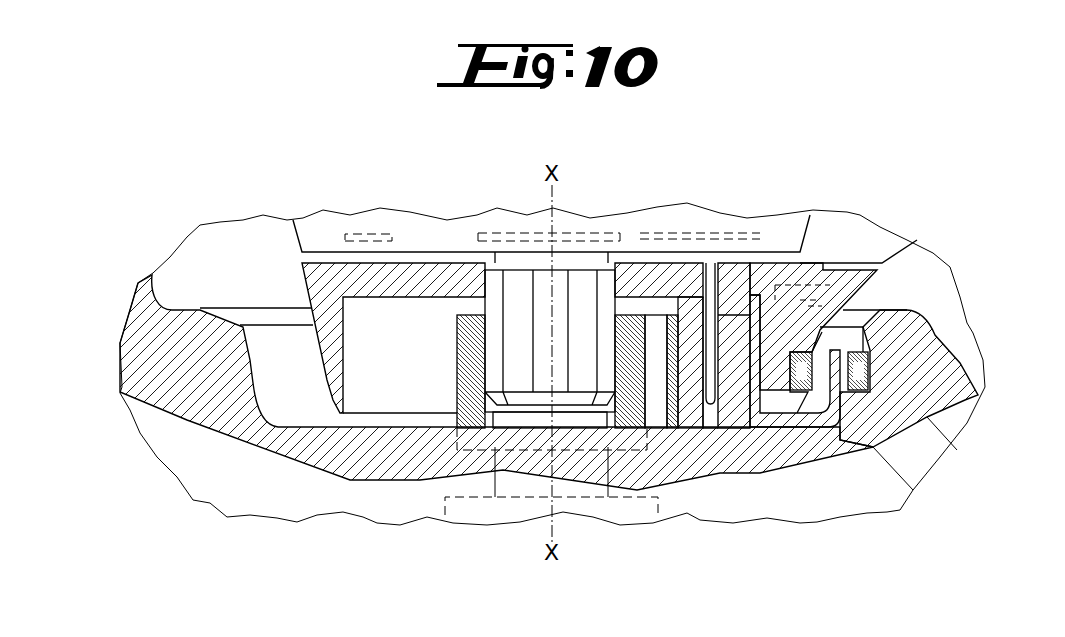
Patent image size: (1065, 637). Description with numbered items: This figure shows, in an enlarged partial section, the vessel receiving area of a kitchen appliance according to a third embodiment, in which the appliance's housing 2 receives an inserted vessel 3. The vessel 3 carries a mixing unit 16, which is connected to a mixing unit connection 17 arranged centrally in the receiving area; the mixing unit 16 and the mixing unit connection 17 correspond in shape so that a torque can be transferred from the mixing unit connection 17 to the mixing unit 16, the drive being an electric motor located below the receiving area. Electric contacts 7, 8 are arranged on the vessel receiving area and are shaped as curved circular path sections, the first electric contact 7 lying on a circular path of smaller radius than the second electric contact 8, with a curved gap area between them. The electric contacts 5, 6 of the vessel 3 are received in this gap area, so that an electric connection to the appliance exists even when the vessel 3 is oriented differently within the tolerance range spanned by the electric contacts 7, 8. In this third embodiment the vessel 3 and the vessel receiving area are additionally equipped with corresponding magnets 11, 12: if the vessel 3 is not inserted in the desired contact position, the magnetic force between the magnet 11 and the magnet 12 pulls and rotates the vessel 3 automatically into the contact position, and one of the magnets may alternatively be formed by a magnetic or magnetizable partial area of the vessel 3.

The housing 2 is at (160, 332).
The vessel 3 is at (316, 222).
The electric contact 5 is at (713, 358).
The electric contact 6 is at (687, 335).
The electric contact 7 is at (670, 385).
The electric contact 8 is at (737, 400).
The magnet 11 is at (800, 380).
The magnet 12 is at (867, 370).
The mixing unit 16 is at (498, 222).
The mixing unit connection 17 is at (497, 315).